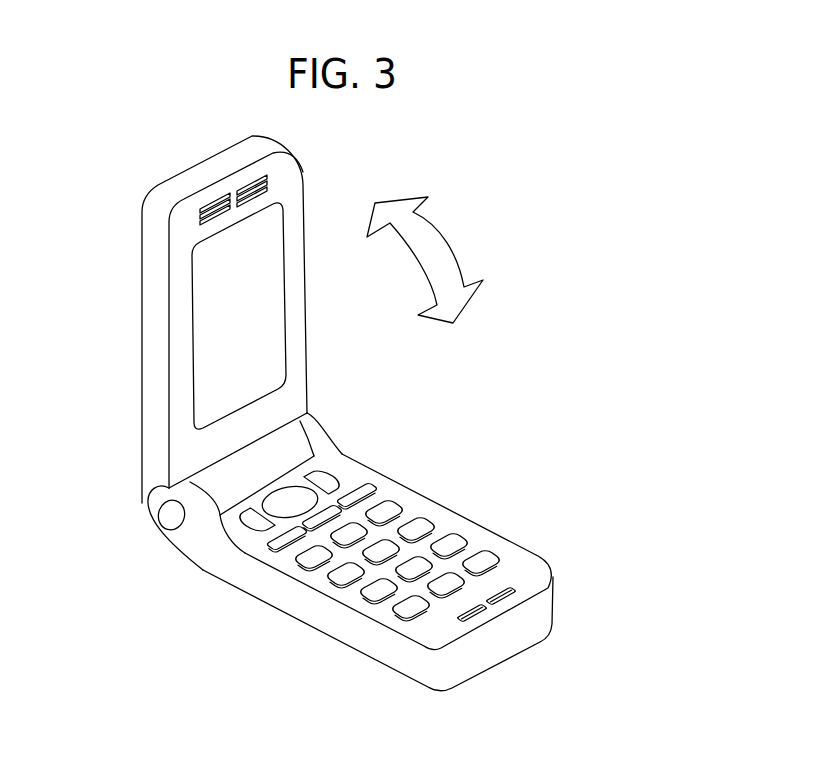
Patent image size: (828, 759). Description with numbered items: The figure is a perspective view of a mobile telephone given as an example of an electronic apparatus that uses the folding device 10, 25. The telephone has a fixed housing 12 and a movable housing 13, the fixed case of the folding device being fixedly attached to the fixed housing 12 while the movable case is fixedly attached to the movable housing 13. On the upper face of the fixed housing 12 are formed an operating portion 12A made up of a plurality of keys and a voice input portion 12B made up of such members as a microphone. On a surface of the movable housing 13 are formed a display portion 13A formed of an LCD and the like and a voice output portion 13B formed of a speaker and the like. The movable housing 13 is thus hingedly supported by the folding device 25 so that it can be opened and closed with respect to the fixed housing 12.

The folding device 10 is at (318, 430).
The folding device 25 is at (297, 445).
The fixed housing 12 is at (390, 591).
The operating portion 12A is at (372, 590).
The voice input portion 12B is at (462, 627).
The movable housing 13 is at (183, 317).
The display portion 13A is at (200, 328).
The voice output portion 13B is at (198, 213).